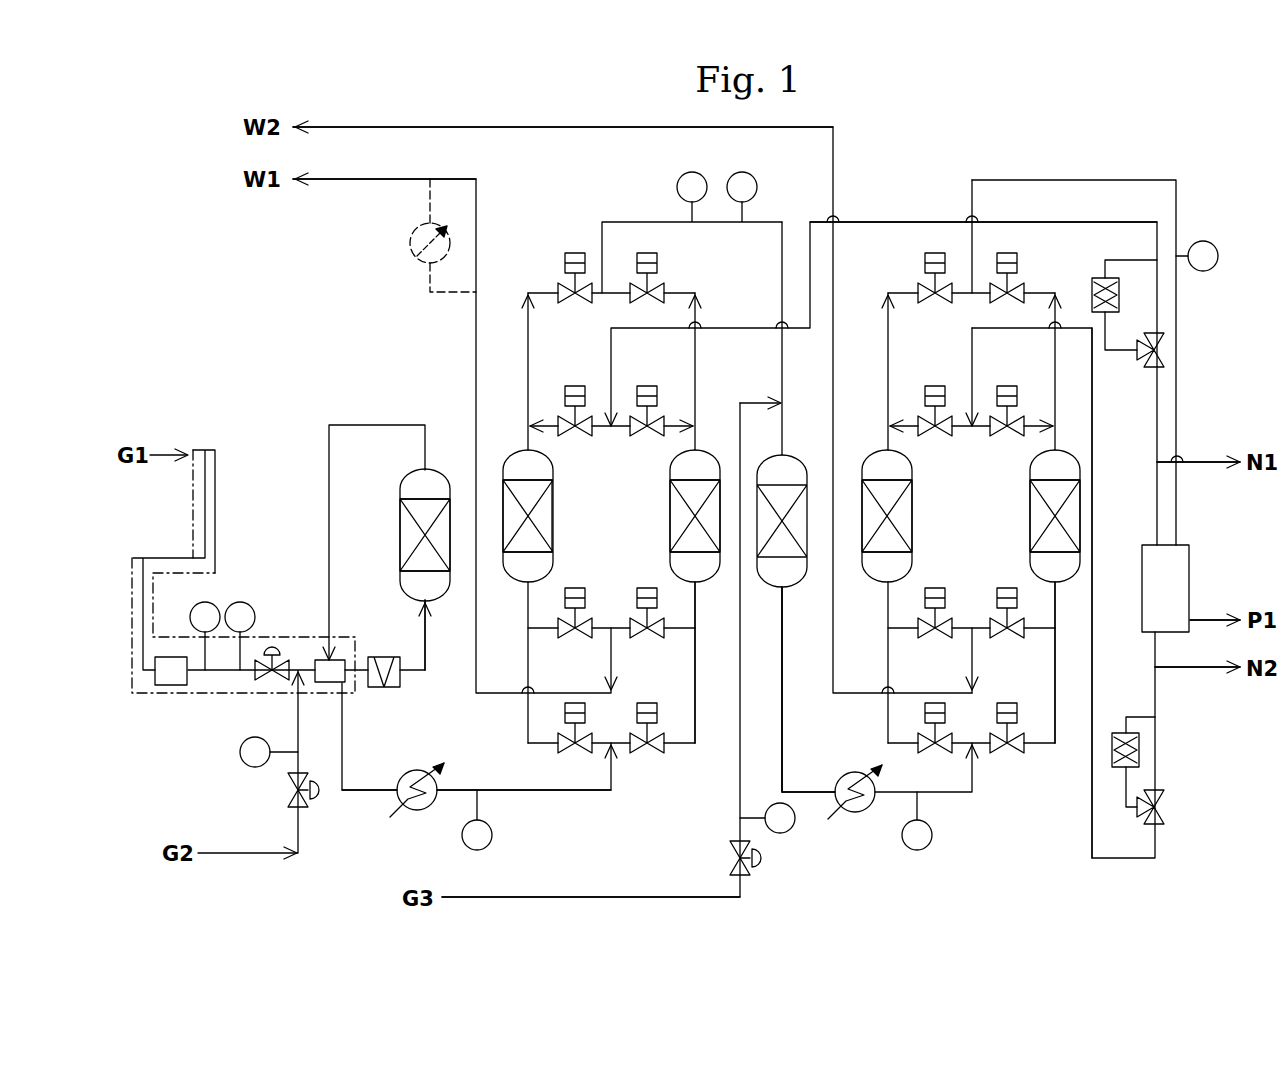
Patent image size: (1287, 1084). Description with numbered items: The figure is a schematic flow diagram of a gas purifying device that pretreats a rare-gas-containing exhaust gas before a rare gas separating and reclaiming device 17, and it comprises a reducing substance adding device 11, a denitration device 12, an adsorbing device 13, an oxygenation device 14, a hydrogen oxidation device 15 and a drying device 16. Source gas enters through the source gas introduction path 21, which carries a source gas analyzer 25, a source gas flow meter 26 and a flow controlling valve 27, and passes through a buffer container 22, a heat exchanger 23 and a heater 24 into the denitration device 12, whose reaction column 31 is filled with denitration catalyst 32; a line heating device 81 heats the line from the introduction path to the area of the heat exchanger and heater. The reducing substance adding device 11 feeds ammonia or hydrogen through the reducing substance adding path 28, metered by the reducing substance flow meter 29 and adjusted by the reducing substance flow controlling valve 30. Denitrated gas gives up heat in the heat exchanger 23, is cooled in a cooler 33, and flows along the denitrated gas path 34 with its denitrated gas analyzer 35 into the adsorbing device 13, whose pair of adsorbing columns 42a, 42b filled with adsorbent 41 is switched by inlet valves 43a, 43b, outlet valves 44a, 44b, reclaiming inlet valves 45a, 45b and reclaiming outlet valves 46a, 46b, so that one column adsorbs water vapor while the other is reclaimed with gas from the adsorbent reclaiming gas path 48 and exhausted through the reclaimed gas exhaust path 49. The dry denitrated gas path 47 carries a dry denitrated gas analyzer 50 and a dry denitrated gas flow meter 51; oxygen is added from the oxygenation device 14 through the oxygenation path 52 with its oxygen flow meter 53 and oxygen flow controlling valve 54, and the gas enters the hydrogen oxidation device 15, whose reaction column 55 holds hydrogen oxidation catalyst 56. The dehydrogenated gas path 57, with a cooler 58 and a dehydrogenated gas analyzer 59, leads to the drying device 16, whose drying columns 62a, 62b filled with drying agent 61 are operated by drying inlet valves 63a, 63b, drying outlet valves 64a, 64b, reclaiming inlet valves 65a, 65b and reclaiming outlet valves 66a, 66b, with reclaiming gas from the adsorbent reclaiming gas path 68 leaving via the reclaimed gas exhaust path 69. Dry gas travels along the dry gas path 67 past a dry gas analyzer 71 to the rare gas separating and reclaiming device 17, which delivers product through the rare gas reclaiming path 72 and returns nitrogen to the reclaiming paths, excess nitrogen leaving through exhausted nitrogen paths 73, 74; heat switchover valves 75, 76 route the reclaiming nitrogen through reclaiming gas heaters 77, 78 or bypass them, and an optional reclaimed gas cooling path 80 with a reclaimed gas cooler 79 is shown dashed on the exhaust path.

The reducing substance adding device 11 is at (300, 835).
The denitration device 12 is at (402, 508).
The adsorbing device 13 is at (687, 748).
The oxygenation device 14 is at (748, 898).
The hydrogen oxidation device 15 is at (792, 590).
The drying device 16 is at (1050, 757).
The rare gas separating and reclaiming device 17 is at (1185, 545).
The source gas introduction path 21 is at (218, 476).
The buffer container 22 is at (171, 687).
The heat exchanger 23 is at (348, 664).
The heater 24 is at (383, 690).
The source gas analyzer 25 is at (214, 604).
The source gas flow meter 26 is at (250, 604).
The flow controlling valve 27 is at (284, 662).
The reducing substance adding path 28 is at (245, 853).
The reducing substance flow meter 29 is at (240, 756).
The reducing substance flow controlling valve 30 is at (310, 798).
The reaction column 31 is at (438, 604).
The denitration catalyst 32 is at (408, 543).
The cooler 33 is at (414, 810).
The denitrated gas path 34 is at (560, 793).
The denitrated gas analyzer 35 is at (490, 842).
The adsorbent 41 is at (668, 528).
The adsorbing column 42a is at (556, 472).
The adsorbing column 42b is at (668, 566).
The inlet valve 43a is at (560, 749).
The inlet valve 43b is at (645, 758).
The outlet valve 44a is at (558, 288).
The outlet valve 44b is at (660, 288).
The reclaiming inlet valve 45a is at (564, 418).
The reclaiming inlet valve 45b is at (652, 418).
The reclaiming outlet valve 46a is at (576, 640).
The reclaiming outlet valve 46b is at (645, 640).
The dry denitrated gas path 47 is at (647, 220).
The adsorbent reclaiming gas path 48 is at (883, 222).
The reclaimed gas exhaust path 49 is at (368, 180).
The dry denitrated gas analyzer 50 is at (681, 172).
The dry denitrated gas flow meter 51 is at (753, 175).
The oxygenation path 52 is at (594, 896).
The oxygen flow meter 53 is at (790, 832).
The oxygen flow controlling valve 54 is at (728, 858).
The reaction column 55 is at (790, 455).
The hydrogen oxidation catalyst 56 is at (779, 560).
The dehydrogenated gas path 57 is at (778, 698).
The cooler 58 is at (870, 813).
The dehydrogenated gas analyzer 59 is at (934, 846).
The drying agent 61 is at (1035, 530).
The drying column 62a is at (915, 515).
The drying column 62b is at (1030, 478).
The drying inlet valve 63a is at (930, 756).
The drying inlet valve 63b is at (1002, 760).
The drying outlet valve 64a is at (918, 290).
The drying outlet valve 64b is at (1010, 298).
The reclaiming inlet valve 65a is at (930, 436).
The reclaiming inlet valve 65b is at (1020, 418).
The reclaiming outlet valve 66a is at (935, 640).
The reclaiming outlet valve 66b is at (1005, 642).
The dry gas path 67 is at (1032, 180).
The adsorbent reclaiming gas path 68 is at (1093, 452).
The reclaimed gas exhaust path 69 is at (378, 128).
The dry gas analyzer 71 is at (1205, 241).
The rare gas reclaiming path 72 is at (1198, 615).
The exhausted nitrogen path 73 is at (1200, 458).
The exhausted nitrogen path 74 is at (1185, 668).
The heat switchover valve 75 is at (1148, 362).
The heat switchover valve 76 is at (1170, 806).
The reclaiming gas heater 77 is at (1095, 278).
The reclaiming gas heater 78 is at (1120, 731).
The reclaimed gas cooler 79 is at (408, 238).
The reclaimed gas cooling path 80 is at (428, 280).
The line heating device 81 is at (217, 540).